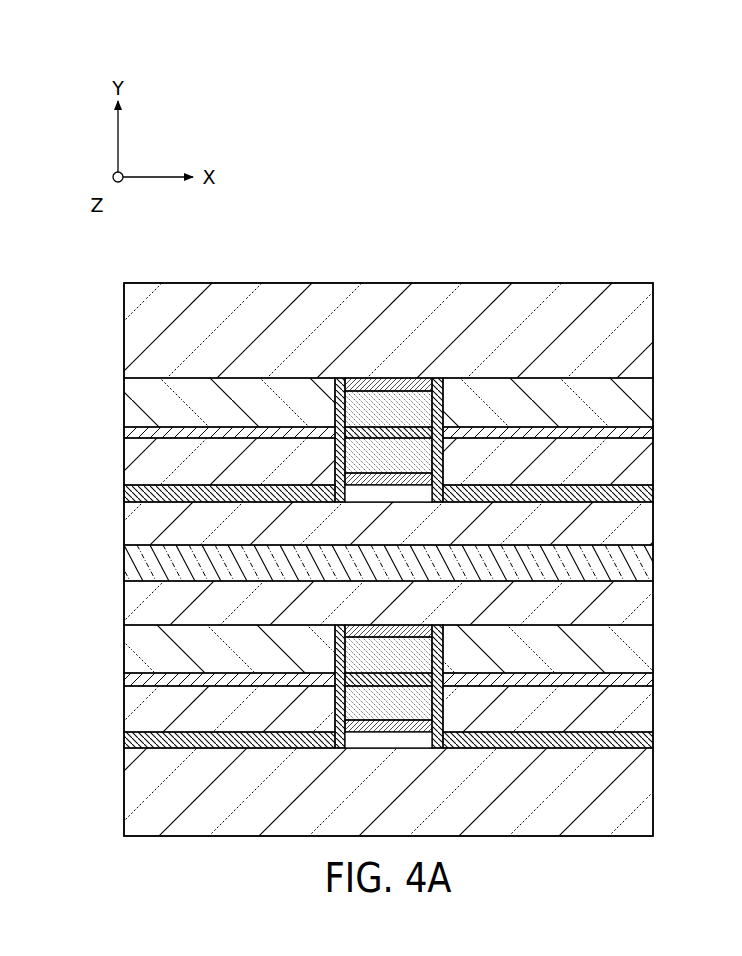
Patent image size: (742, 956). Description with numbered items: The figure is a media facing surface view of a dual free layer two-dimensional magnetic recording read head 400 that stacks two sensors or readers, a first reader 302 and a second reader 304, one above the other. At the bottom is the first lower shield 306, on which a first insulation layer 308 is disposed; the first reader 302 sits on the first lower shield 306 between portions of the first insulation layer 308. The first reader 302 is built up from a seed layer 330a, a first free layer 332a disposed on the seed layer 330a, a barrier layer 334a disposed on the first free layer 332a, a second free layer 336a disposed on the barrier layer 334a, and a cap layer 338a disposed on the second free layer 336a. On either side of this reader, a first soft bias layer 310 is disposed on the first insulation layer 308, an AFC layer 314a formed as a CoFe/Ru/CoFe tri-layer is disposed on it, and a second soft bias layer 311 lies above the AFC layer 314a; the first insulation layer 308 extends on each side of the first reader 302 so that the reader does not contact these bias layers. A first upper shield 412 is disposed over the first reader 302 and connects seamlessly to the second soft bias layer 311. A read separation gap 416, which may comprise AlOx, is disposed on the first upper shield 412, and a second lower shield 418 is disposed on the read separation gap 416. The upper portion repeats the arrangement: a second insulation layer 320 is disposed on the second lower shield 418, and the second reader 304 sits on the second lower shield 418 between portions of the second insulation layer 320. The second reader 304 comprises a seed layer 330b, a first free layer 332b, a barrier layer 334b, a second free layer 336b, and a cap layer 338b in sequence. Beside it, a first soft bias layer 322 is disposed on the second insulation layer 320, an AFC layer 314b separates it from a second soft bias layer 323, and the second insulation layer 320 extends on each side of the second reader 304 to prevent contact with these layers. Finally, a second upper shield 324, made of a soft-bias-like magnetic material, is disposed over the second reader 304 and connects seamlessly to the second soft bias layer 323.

The DFL TDMR read head 400 is at (303, 126).
The first sensor 302 is at (665, 630).
The second sensor 304 is at (665, 365).
The first lower shield 306 is at (543, 791).
The first insulation layer 308 is at (478, 749).
The first soft bias layer 310 is at (543, 721).
The second soft bias layer 311 is at (543, 663).
The AFC layer 314a is at (186, 673).
The AFC layer 314b is at (186, 427).
The second insulation layer 320 is at (488, 502).
The first soft bias layer 322 is at (543, 471).
The second soft bias layer 323 is at (543, 418).
The second upper shield 324 is at (543, 343).
The seed layer 330a is at (390, 733).
The seed layer 330b is at (390, 486).
The first free layer 332a is at (388, 703).
The first free layer 332b is at (388, 455).
The barrier layer 334a is at (335, 665).
The barrier layer 334b is at (335, 414).
The second free layer 336a is at (388, 655).
The second free layer 336b is at (388, 409).
The cap layer 338a is at (398, 625).
The cap layer 338b is at (388, 378).
The first upper shield 412 is at (543, 615).
The read separation gap 416 is at (488, 575).
The second lower shield 418 is at (543, 533).